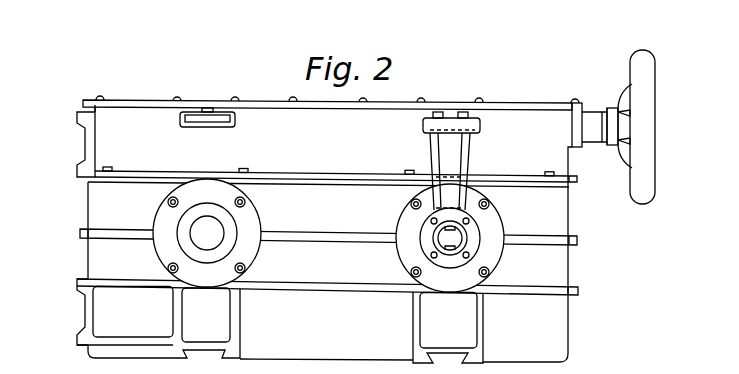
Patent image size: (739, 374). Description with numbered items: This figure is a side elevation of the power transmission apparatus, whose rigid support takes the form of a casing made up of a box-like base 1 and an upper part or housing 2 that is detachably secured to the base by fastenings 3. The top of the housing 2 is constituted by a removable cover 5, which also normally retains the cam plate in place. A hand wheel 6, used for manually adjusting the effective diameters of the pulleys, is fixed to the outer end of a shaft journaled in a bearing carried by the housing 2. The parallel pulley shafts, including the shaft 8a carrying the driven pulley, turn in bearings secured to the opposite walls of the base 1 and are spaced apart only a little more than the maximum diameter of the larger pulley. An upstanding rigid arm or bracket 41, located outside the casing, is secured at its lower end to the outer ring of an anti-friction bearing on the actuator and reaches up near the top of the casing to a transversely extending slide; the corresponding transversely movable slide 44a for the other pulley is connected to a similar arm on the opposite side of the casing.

The box-like base 1 is at (88, 219).
The upper part or housing 2 is at (558, 162).
The fastenings 3 is at (252, 168).
The removable cover 5 is at (496, 101).
The hand wheel 6 is at (649, 57).
The shaft 8a is at (195, 237).
The upstanding rigid arm or bracket 41 is at (472, 152).
The transversely movable slide 44a is at (258, 65).